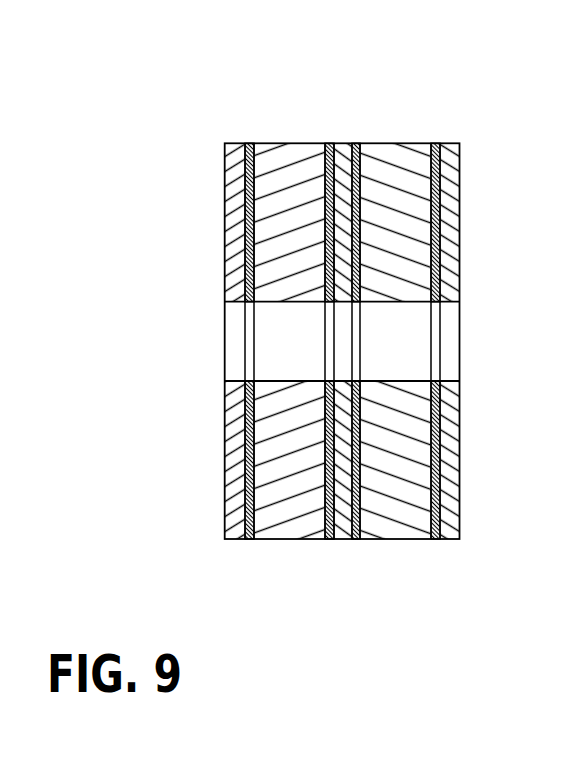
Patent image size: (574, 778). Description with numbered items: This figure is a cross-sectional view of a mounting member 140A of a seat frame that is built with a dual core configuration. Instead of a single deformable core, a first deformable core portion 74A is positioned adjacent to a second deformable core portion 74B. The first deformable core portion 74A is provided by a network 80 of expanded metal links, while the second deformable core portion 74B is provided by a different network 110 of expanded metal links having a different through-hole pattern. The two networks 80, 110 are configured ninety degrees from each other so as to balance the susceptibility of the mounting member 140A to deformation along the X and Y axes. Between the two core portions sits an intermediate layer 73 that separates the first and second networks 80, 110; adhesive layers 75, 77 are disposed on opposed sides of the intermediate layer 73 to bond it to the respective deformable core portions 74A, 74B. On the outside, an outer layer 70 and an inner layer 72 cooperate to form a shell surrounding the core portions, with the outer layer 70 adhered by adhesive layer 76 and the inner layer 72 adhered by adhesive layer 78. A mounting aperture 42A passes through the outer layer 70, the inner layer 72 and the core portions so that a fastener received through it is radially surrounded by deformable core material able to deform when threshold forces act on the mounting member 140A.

The mounting member 140A is at (338, 331).
The first deformable core portion 74A is at (302, 175).
The second deformable core portion 74B is at (392, 175).
The adhesive layer 78 is at (248, 196).
The adhesive layer 76 is at (442, 192).
The inner layer 72 is at (225, 270).
The outer layer 70 is at (460, 272).
The mounting aperture 42A is at (300, 382).
The network 80 is at (280, 468).
The network 110 is at (391, 470).
The adhesive layer 77 is at (328, 524).
The intermediate layer 73 is at (341, 510).
The adhesive layer 75 is at (373, 528).